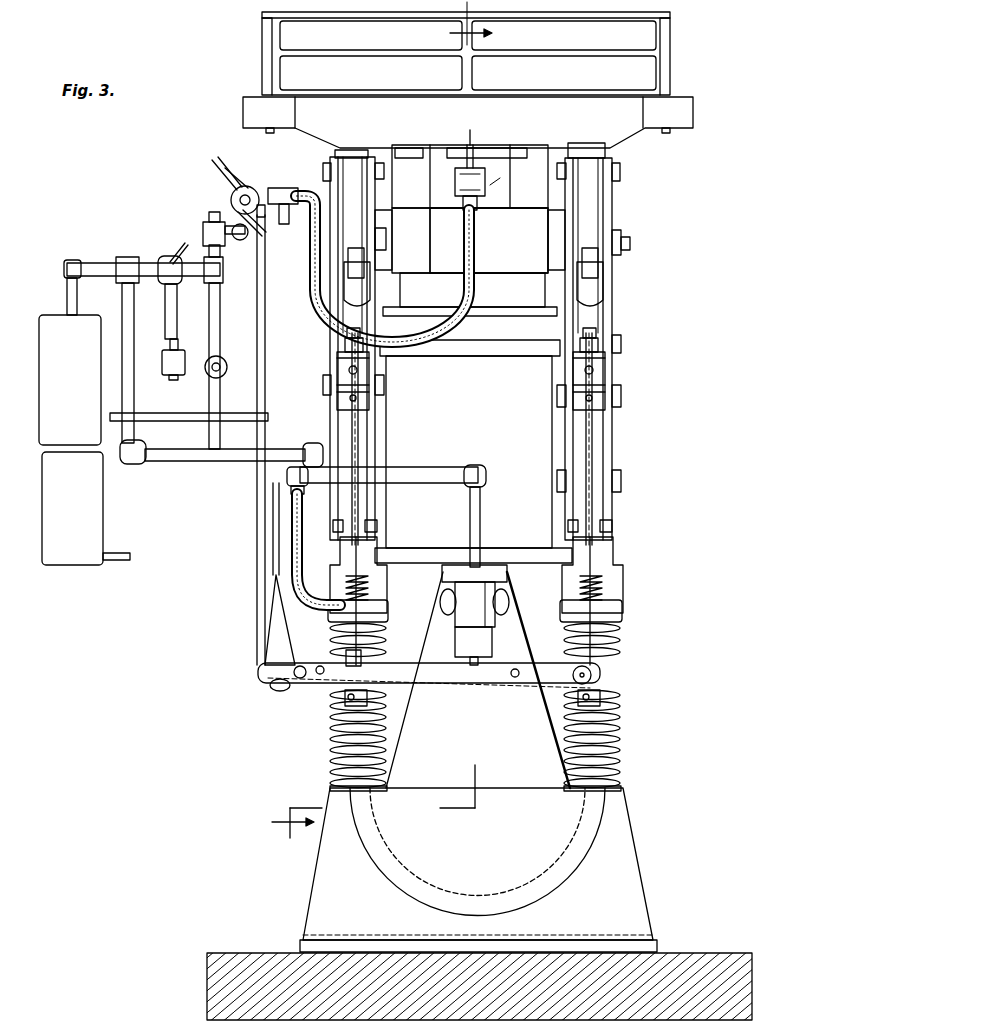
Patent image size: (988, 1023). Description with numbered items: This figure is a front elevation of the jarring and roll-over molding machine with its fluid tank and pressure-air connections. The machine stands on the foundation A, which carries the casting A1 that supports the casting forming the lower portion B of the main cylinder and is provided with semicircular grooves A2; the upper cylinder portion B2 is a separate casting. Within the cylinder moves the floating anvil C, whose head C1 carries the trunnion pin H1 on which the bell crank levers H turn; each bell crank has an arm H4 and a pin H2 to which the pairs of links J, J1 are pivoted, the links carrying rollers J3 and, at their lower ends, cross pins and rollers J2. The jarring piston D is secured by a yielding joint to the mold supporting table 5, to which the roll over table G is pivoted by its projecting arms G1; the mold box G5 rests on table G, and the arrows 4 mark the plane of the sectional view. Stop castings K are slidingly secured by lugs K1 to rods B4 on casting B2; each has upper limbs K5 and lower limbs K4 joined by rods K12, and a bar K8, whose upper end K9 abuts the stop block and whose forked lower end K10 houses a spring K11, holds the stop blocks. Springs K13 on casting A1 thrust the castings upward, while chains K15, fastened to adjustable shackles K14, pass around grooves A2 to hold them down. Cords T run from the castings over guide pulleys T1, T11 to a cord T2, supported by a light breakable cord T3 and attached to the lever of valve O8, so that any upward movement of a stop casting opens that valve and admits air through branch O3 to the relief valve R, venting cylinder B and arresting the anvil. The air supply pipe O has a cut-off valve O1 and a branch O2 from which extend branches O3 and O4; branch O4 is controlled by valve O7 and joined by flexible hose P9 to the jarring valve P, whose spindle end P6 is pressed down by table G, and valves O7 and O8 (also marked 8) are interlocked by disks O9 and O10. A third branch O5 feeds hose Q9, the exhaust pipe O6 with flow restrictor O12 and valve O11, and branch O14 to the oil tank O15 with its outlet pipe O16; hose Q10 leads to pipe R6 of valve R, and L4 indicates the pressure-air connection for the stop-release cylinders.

The mold box G5 is at (466, 53).
The section line 4 is at (370, 420).
The roll over table G is at (468, 127).
The projecting arms G1 is at (352, 150).
The jarring piston D is at (470, 176).
The part 5 is at (501, 173).
The jarring air valve P is at (462, 182).
The spindle upper end P6 is at (480, 145).
The flexible hose P9 is at (470, 240).
The anvil head C1 is at (489, 240).
The floating anvil C is at (470, 294).
The links J1 is at (482, 267).
The upper cylinder portion B2 is at (470, 444).
The lower main cylinder portion B is at (473, 581).
The pressure air connection L4 is at (285, 204).
The bell crank levers H is at (471, 348).
The pins H2 is at (620, 172).
The trunnion pin H1 is at (375, 240).
The rollers J3 is at (348, 258).
The arm H4 is at (348, 285).
The rods B4 is at (330, 385).
The lugs K1 is at (323, 390).
The stop castings K is at (345, 422).
The bar upper end K9 is at (588, 415).
The links J is at (337, 360).
The rods K12 is at (347, 333).
The upper limbs K5 is at (621, 345).
The cords T is at (358, 466).
The breakable cord T3 is at (303, 452).
The pipe R6 is at (480, 525).
The relief valve R is at (475, 615).
The cross pins and rollers J2 is at (378, 525).
The bar K8 is at (345, 560).
The forked lower end K10 is at (375, 590).
The spring K11 is at (372, 598).
The lower limbs K4 is at (338, 612).
The chains K15 is at (330, 720).
The adjustable shackles K14 is at (345, 697).
The springs K13 is at (592, 676).
The guide pulleys T1 is at (300, 666).
The guide pulley T11 is at (275, 690).
The cord T2 is at (272, 500).
The flexible hose Q9 is at (290, 505).
The flexible hose Q10 is at (291, 555).
The air supply pipe O is at (207, 462).
The branch conduit O14 is at (115, 348).
The oil tank O15 is at (42, 475).
The pipe O16 is at (112, 560).
The exhaust branch pipe O6 is at (170, 340).
The valve O11 is at (158, 265).
The flow restricting device O12 is at (168, 368).
The branch of supply pipe O2 is at (222, 353).
The cut-off valve O1 is at (232, 357).
The third branch O5 is at (200, 282).
The branch conduit O3 is at (203, 232).
The interlocking disk O9 is at (245, 186).
The branch conduit O4 is at (228, 178).
The valve O7 is at (228, 170).
The interlocking disk O10 is at (236, 212).
The valve O8 is at (265, 225).
The part 8 is at (243, 240).
The supporting casting A1 is at (478, 762).
The semicircular grooves A2 is at (575, 836).
The foundation A is at (461, 986).